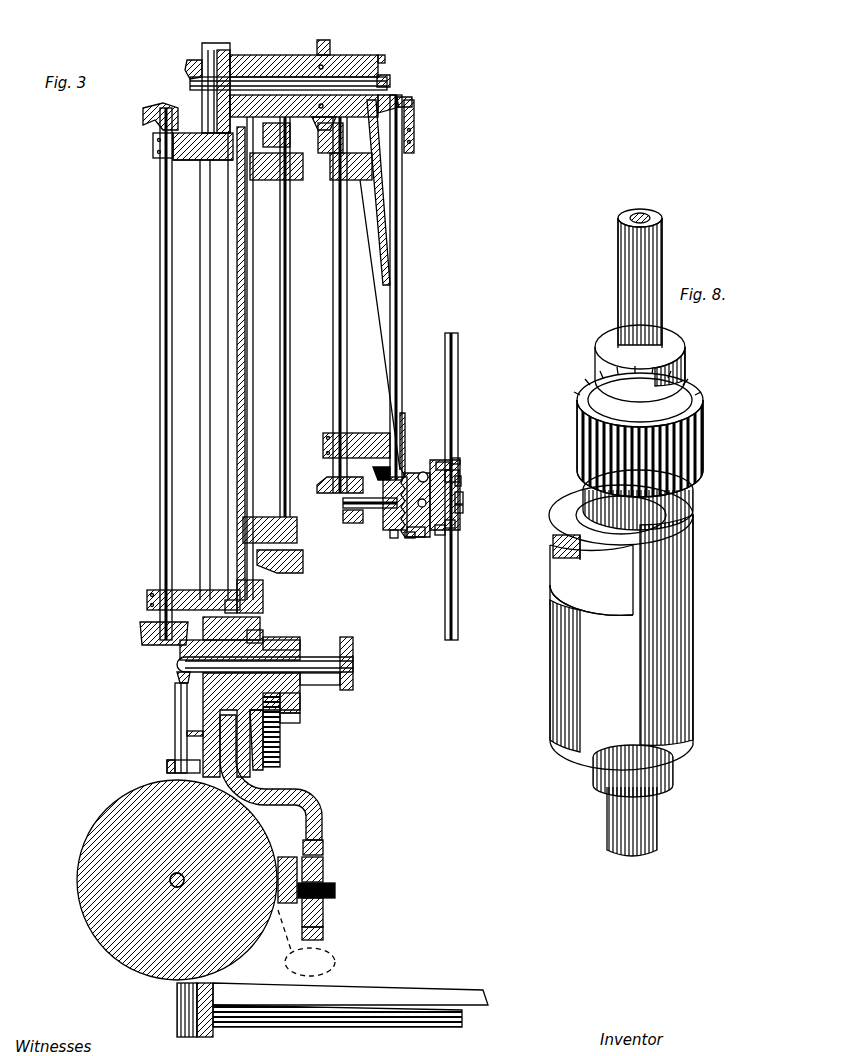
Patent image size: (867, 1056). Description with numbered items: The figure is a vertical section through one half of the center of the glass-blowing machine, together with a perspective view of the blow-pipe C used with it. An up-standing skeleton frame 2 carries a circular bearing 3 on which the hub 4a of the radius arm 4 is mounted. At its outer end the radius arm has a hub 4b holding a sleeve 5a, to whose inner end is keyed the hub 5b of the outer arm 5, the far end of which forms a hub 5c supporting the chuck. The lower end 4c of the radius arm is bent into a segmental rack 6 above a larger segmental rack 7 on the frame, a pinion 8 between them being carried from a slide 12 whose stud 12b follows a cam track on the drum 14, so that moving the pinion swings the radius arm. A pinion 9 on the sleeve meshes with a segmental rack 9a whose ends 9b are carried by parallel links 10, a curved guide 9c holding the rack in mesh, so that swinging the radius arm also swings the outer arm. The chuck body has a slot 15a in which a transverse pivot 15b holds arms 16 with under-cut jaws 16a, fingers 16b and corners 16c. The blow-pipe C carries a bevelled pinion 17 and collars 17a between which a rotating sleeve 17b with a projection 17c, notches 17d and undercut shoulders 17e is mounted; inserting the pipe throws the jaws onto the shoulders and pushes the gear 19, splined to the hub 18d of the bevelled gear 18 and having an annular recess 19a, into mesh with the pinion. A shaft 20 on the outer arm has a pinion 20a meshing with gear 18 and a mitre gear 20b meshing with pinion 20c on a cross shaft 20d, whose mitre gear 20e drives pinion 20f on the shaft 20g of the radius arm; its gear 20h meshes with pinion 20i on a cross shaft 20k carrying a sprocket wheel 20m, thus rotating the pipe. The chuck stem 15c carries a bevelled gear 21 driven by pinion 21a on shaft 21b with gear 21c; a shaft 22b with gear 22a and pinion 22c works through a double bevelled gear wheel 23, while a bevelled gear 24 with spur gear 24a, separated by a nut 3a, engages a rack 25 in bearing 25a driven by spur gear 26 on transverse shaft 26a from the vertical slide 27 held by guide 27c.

In FIG. 3, the skeleton frame 2 is at (210, 695).
In FIG. 3, the circular bearing 3 is at (180, 650).
In FIG. 3, the nut 3a is at (265, 715).
In FIG. 3, the radius arm 4 is at (243, 368).
In FIG. 3, the hub of radius arm 4a is at (245, 640).
In FIG. 3, the hub 4b is at (240, 58).
In FIG. 3, the lower end of radius arm 4c is at (322, 823).
In FIG. 3, the outer arm 5 is at (378, 190).
In FIG. 3, the sleeve 5a is at (313, 57).
In FIG. 3, the hub of outer arm 5b is at (378, 72).
In FIG. 3, the hub 5c is at (393, 535).
In FIG. 3, the segmental rack 6 is at (323, 847).
In FIG. 3, the segmental rack 7 is at (323, 934).
In FIG. 3, the pinion 8 is at (335, 905).
In FIG. 3, the pinion 9 is at (232, 60).
In FIG. 3, the segmental rack 9a is at (160, 140).
In FIG. 3, the ends of segmental rack 9b is at (223, 50).
In FIG. 3, the curved guide 9c is at (193, 160).
In FIG. 3, the parallel links 10 is at (205, 245).
In FIG. 3, the slide 12 is at (297, 865).
In FIG. 3, the stud 12b is at (306, 943).
In FIG. 3, the drum 14 is at (100, 897).
In FIG. 3, the slot 15a is at (425, 472).
In FIG. 3, the transverse pivot 15b is at (420, 537).
In FIG. 3, the stem 15c is at (375, 510).
In FIG. 3, the chuck arms 16 is at (462, 490).
In FIG. 3, the under-cut jaws 16a is at (452, 527).
In FIG. 3, the fingers 16b is at (443, 532).
In FIG. 3, the corner 16c is at (462, 510).
In FIG. 3, the bevelled pinion 17 is at (457, 475).
In FIG. 8, the bevelled pinion 17 is at (690, 450).
In FIG. 3, the collars 17a is at (461, 482).
In FIG. 8, the collars 17a is at (690, 497).
In FIG. 3, the rotating sleeve 17b is at (462, 498).
In FIG. 8, the rotating sleeve 17b is at (668, 585).
In FIG. 8, the projection 17c is at (587, 585).
In FIG. 8, the notch 17d is at (563, 550).
In FIG. 8, the undercut shoulders 17e is at (580, 545).
In FIG. 3, the bevelled gear 18 is at (393, 530).
In FIG. 3, the hub 18d is at (410, 538).
In FIG. 3, the second gear 19 is at (443, 465).
In FIG. 3, the annular recess 19a is at (456, 458).
In FIG. 3, the shaft 20 is at (403, 298).
In FIG. 3, the bevelled pinion 20a is at (380, 468).
In FIG. 3, the mitre gear 20b is at (410, 100).
In FIG. 3, the pinion 20c is at (388, 80).
In FIG. 3, the cross shaft 20d is at (380, 57).
In FIG. 3, the mitre gear 20e is at (195, 62).
In FIG. 3, the mitre pinion 20f is at (148, 112).
In FIG. 3, the shaft 20g is at (160, 308).
In FIG. 3, the mitre gear 20h is at (155, 642).
In FIG. 3, the pinion 20i is at (180, 677).
In FIG. 3, the cross shaft 20k is at (322, 686).
In FIG. 3, the sprocket wheel 20m is at (353, 663).
In FIG. 3, the bevelled gear 21 is at (343, 515).
In FIG. 3, the pinion 21a is at (325, 490).
In FIG. 3, the shaft 21b is at (333, 380).
In FIG. 3, the bevelled gear 21c is at (335, 182).
In FIG. 3, the bevelled gear 22a is at (300, 567).
In FIG. 3, the shaft 22b is at (291, 290).
In FIG. 3, the bevelled pinion 22c is at (390, 128).
In FIG. 3, the double bevelled gear wheel 23 is at (332, 47).
In FIG. 3, the bevelled gear 24 is at (265, 598).
In FIG. 3, the spur gear 24a is at (277, 634).
In FIG. 3, the rack 25 is at (300, 716).
In FIG. 3, the bearing 25a is at (302, 703).
In FIG. 3, the spur gear 26 is at (282, 748).
In FIG. 3, the transverse shaft 26a is at (187, 733).
In FIG. 3, the vertical slide 27 is at (176, 755).
In FIG. 3, the guide 27c is at (168, 768).
In FIG. 3, the blow-pipe c is at (455, 380).
In FIG. 8, the blow-pipe c is at (663, 258).